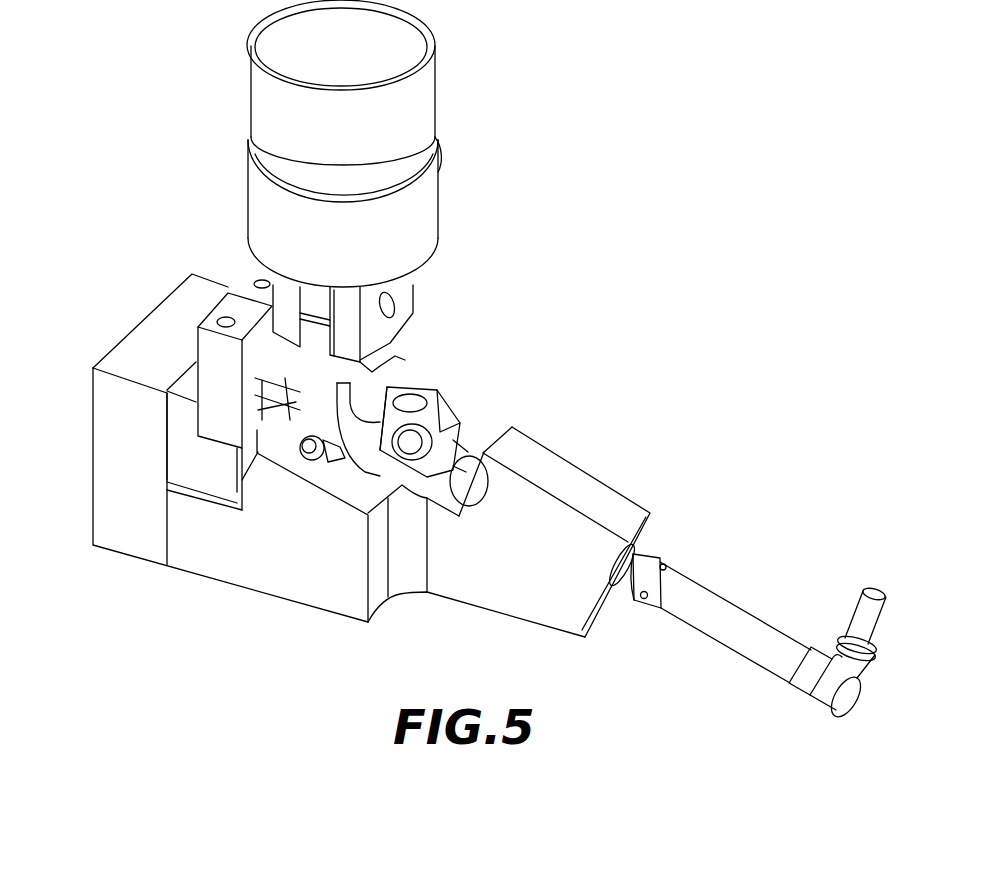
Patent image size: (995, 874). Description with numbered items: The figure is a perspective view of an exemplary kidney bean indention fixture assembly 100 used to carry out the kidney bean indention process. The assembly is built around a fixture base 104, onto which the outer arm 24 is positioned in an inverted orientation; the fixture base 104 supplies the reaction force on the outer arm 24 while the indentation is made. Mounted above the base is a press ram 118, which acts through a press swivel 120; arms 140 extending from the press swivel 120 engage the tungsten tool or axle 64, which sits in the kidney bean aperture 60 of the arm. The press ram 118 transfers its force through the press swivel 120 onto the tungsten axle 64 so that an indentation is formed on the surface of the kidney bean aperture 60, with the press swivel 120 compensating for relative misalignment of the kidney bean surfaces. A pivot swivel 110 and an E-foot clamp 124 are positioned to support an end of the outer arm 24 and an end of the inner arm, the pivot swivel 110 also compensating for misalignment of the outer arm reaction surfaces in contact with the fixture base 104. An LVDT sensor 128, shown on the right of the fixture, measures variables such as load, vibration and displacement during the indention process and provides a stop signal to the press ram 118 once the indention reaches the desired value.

The kidney bean indention fixture assembly 100 is at (679, 78).
The press ram 118 is at (405, 163).
The E-foot clamp 124 is at (233, 305).
The press swivel 120 is at (357, 375).
The outer arm 24 is at (413, 384).
The arms 140 is at (320, 417).
The pivot swivel 110 is at (198, 455).
The fixture base 104 is at (245, 542).
The tungsten tool or axle 64 is at (311, 452).
The kidney bean aperture 60 is at (338, 452).
The linear variable displacement transformer (LVDT) sensor 128 is at (672, 570).